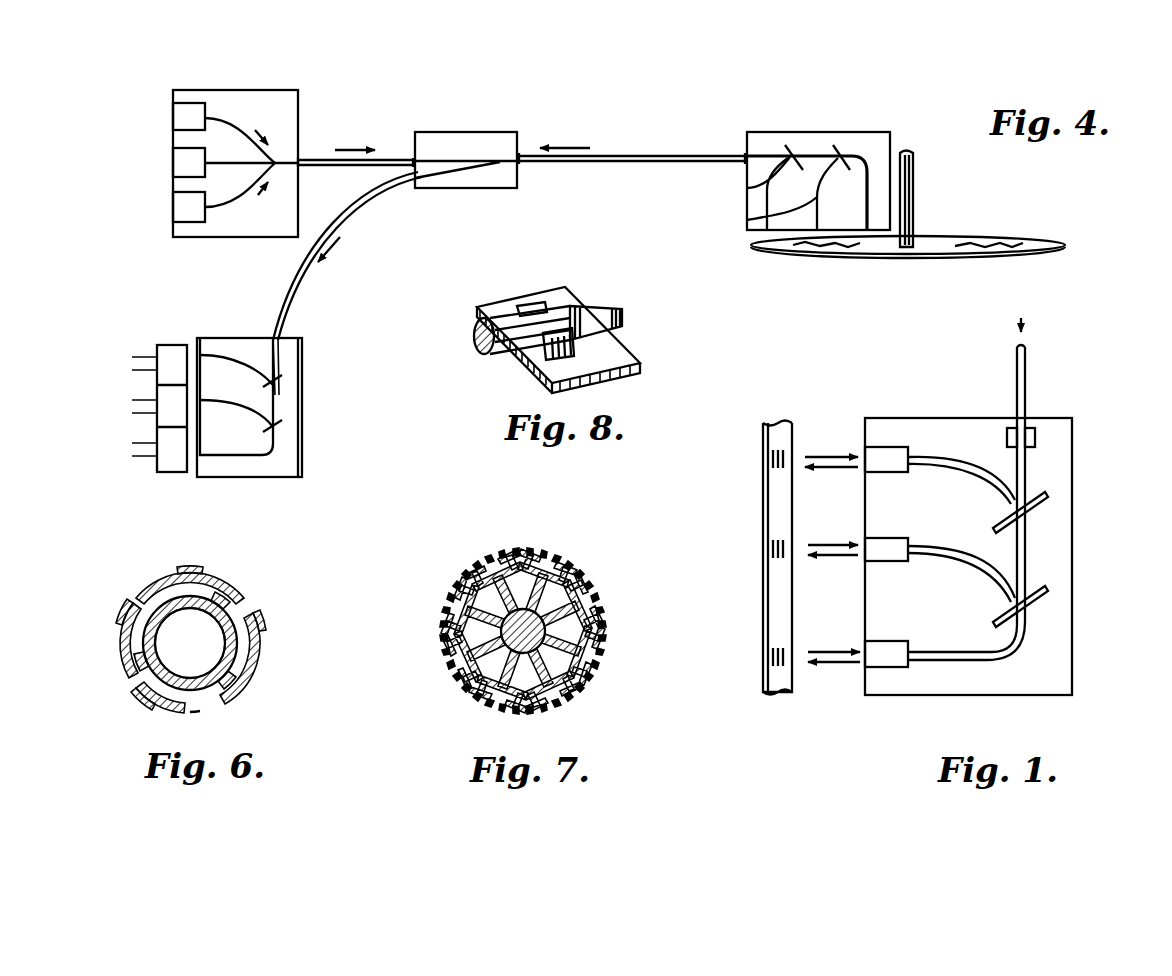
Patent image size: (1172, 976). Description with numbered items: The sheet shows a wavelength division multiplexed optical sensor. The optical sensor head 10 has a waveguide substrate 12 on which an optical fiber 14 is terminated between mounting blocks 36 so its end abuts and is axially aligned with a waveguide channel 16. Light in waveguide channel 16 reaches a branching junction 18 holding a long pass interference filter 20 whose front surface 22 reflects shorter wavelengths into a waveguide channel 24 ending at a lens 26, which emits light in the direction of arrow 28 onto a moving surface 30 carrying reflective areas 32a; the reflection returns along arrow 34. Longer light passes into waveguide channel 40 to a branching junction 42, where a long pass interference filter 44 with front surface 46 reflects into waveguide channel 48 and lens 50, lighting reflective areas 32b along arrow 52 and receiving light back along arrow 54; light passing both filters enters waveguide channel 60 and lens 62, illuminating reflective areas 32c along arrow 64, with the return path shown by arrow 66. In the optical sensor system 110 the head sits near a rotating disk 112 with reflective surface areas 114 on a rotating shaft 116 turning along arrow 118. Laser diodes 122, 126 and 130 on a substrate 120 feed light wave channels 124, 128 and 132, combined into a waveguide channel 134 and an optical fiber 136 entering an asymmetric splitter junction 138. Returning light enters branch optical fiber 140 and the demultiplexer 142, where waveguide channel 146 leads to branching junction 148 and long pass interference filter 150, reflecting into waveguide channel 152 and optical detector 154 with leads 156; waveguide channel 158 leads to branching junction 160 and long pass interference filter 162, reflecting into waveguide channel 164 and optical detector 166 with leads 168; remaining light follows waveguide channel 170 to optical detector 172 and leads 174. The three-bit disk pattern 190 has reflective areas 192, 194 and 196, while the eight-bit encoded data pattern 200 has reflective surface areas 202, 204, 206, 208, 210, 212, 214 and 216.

In FIG. 1, the optical sensor head 10 is at (910, 522).
In FIG. 8, the waveguide substrate 12 is at (628, 368).
In FIG. 4, the optical fiber 14 is at (672, 156).
In FIG. 8, the optical fiber 14 is at (503, 354).
In FIG. 1, the optical fiber 14 is at (1026, 362).
In FIG. 4, the waveguide channel 16 is at (767, 132).
In FIG. 8, the waveguide channel 16 is at (600, 306).
In FIG. 1, the waveguide channel 16 is at (1026, 462).
In FIG. 1, the branching junction 18 is at (1015, 492).
In FIG. 4, the long pass interference filter 20 is at (797, 150).
In FIG. 1, the long pass interference filter 20 is at (1040, 500).
In FIG. 1, the front surface 22 is at (1000, 515).
In FIG. 1, the waveguide channel 24 is at (935, 455).
In FIG. 1, the lens 26 is at (890, 447).
In FIG. 1, the arrow 28 is at (822, 468).
In FIG. 1, the moving surface 30 is at (768, 432).
In FIG. 1, the reflective areas 32a is at (768, 460).
In FIG. 1, the reflective areas 32b is at (768, 549).
In FIG. 1, the reflective areas 32c is at (768, 657).
In FIG. 1, the arrow 34 is at (828, 456).
In FIG. 1, the mounting blocks 36 is at (1008, 430).
In FIG. 4, the waveguide channel 40 is at (838, 150).
In FIG. 1, the waveguide channel 40 is at (1026, 548).
In FIG. 1, the branching junction 42 is at (1015, 578).
In FIG. 4, the long pass interference filter 44 is at (866, 165).
In FIG. 1, the long pass interference filter 44 is at (1040, 592).
In FIG. 1, the front surface 46 is at (1000, 606).
In FIG. 1, the waveguide channel 48 is at (935, 547).
In FIG. 1, the lens 50 is at (890, 561).
In FIG. 1, the arrow 52 is at (828, 556).
In FIG. 1, the arrow 54 is at (830, 544).
In FIG. 1, the optical waveguide channel 60 is at (1072, 652).
In FIG. 1, the lens 62 is at (890, 667).
In FIG. 1, the arrow 64 is at (830, 664).
In FIG. 1, the third output signal 66 is at (828, 651).
In FIG. 4, the optical sensor system 110 is at (618, 198).
In FIG. 4, the rotating disk 112 is at (1065, 245).
In FIG. 4, the reflective surface areas 114 is at (1000, 236).
In FIG. 4, the rotating shaft 116 is at (913, 195).
In FIG. 4, the arrow 118 is at (935, 268).
In FIG. 4, the substrate 120 is at (207, 90).
In FIG. 4, the laser diode 122 is at (173, 110).
In FIG. 4, the light wave channel 124 is at (245, 122).
In FIG. 4, the laser diode 126 is at (173, 163).
In FIG. 4, the light wave channel 128 is at (225, 160).
In FIG. 4, the laser diode 130 is at (173, 209).
In FIG. 4, the light wave channel 132 is at (228, 237).
In FIG. 4, the waveguide channel 134 is at (297, 160).
In FIG. 4, the optical fiber 136 is at (393, 158).
In FIG. 4, the asymmetric splitter junction 138 is at (463, 132).
In FIG. 4, the branch optical fiber 140 is at (363, 207).
In FIG. 4, the demultiplexer 142 is at (322, 455).
In FIG. 4, the waveguide channel 146 is at (302, 345).
In FIG. 4, the branching junction 148 is at (256, 370).
In FIG. 4, the long pass interference filter 150 is at (283, 382).
In FIG. 4, the waveguide channel 152 is at (205, 355).
In FIG. 4, the optical detector 154 is at (163, 345).
In FIG. 4, the leads 156 is at (132, 362).
In FIG. 4, the waveguide channel 158 is at (283, 405).
In FIG. 4, the branching junction 160 is at (265, 430).
In FIG. 4, the long pass interference filter 162 is at (283, 425).
In FIG. 4, the waveguide channel 164 is at (230, 387).
In FIG. 4, the optical detector 166 is at (170, 418).
In FIG. 4, the second detector leads 168 is at (132, 406).
In FIG. 4, the waveguide channel 170 is at (242, 477).
In FIG. 4, the optical detector 172 is at (173, 470).
In FIG. 4, the leads 174 is at (132, 450).
In FIG. 6, the spring clamp 190 is at (190, 645).
In FIG. 6, the reflective areas 192 is at (135, 598).
In FIG. 6, the reflective areas 194 is at (135, 660).
In FIG. 6, the reflective areas 196 is at (142, 683).
In FIG. 7, the encoded data pattern 200 is at (524, 601).
In FIG. 7, the reflective surface areas 202 is at (552, 557).
In FIG. 7, the reflective surface areas 204 is at (470, 590).
In FIG. 7, the reflective surface areas 206 is at (446, 640).
In FIG. 7, the reflective surface areas 208 is at (462, 672).
In FIG. 7, the reflective surface areas 210 is at (590, 665).
In FIG. 7, the reflective surface areas 212 is at (600, 620).
In FIG. 7, the reflective surface areas 214 is at (520, 580).
In FIG. 7, the reflective surface areas 216 is at (452, 618).